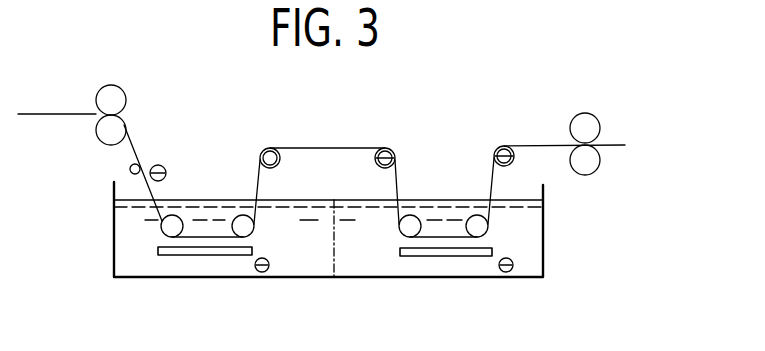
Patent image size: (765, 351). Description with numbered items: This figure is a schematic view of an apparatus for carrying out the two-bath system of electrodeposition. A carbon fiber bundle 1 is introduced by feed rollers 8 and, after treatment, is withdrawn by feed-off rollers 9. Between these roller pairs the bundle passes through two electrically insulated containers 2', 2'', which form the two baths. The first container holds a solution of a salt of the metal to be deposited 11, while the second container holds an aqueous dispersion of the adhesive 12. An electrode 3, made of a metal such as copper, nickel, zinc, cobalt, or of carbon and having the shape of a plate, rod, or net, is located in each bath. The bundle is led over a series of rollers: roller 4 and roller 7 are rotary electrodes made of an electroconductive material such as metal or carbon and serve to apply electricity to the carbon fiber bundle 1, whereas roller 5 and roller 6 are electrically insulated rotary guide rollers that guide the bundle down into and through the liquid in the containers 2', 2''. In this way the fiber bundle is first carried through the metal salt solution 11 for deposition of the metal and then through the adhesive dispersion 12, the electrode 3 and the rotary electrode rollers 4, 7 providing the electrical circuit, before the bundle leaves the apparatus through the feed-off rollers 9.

The carbon fiber bundle 1 is at (47, 113).
The electrically insulated container 2' is at (239, 263).
The electrically insulated container 2'' is at (445, 305).
The electrode 3 is at (232, 262).
The roller 4 is at (140, 164).
The roller 5 is at (178, 214).
The roller 6 is at (232, 214).
The roller 7 is at (396, 150).
The feed rollers 8 is at (125, 92).
The feed-off rollers 9 is at (592, 114).
The solution of a salt of the metal to be deposited 11 is at (130, 220).
The aqueous dispersion of the adhesive 12 is at (528, 255).